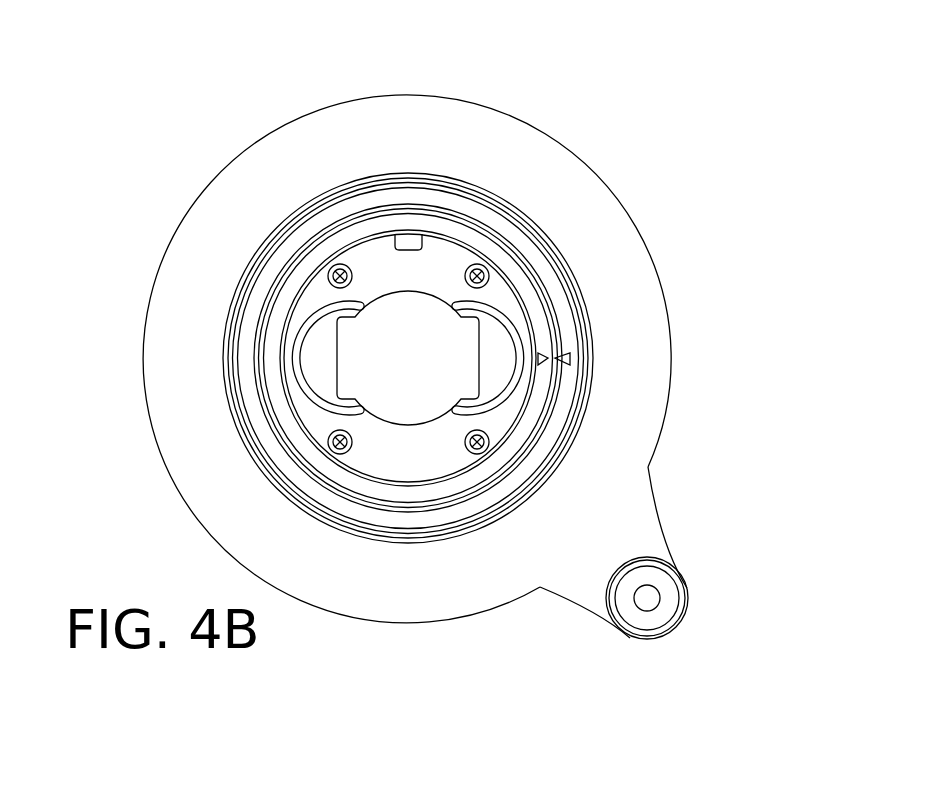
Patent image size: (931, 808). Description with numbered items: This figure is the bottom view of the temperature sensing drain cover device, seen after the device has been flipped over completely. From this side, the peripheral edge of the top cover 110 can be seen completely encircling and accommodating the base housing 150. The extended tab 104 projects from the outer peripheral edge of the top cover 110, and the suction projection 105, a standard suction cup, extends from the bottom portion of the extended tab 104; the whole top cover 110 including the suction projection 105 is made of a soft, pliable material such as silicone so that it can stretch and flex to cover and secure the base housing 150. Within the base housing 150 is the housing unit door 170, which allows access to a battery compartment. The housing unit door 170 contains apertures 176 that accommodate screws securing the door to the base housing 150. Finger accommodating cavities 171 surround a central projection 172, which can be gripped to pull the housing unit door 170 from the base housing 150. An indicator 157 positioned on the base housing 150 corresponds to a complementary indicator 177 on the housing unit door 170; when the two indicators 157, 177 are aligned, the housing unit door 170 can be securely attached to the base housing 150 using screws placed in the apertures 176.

The top cover 110 is at (187, 213).
The extended tab 104 is at (663, 537).
The suction projection 105 is at (675, 592).
The base housing 150 is at (300, 233).
The housing unit door 170 is at (373, 212).
The apertures 176 is at (487, 265).
The central projection 172 is at (433, 369).
The finger accommodating cavities 171 is at (505, 318).
The indicator 157 is at (568, 364).
The complementary indicator 177 is at (540, 366).